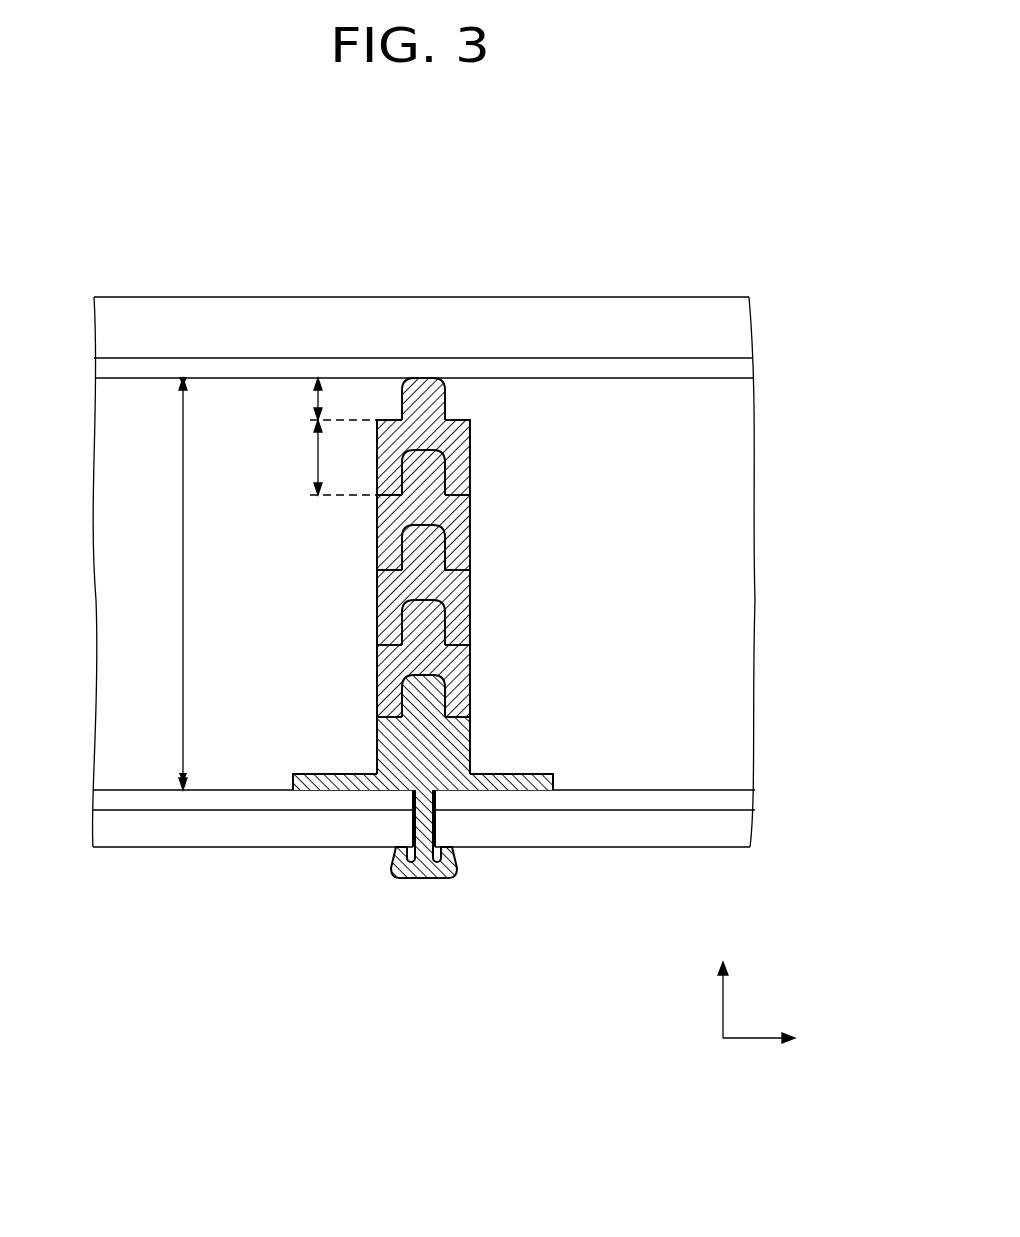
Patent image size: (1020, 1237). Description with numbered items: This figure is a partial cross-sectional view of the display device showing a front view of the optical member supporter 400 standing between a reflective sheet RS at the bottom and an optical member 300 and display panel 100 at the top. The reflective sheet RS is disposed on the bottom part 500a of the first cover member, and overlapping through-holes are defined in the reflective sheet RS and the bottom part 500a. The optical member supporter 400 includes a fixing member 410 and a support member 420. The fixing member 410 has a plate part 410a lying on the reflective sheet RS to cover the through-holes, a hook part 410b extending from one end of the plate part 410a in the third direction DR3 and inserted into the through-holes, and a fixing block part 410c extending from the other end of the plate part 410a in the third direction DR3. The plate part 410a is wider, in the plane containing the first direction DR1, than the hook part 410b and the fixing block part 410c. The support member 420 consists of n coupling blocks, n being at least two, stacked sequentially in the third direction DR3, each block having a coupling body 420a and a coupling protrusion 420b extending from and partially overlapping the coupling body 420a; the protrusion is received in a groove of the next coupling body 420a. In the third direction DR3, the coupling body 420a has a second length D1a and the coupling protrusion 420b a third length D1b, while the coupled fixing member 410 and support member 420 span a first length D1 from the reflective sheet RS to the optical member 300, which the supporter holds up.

The display panel 100 is at (743, 327).
The optical member 300 is at (745, 367).
The optical member supporter 400 is at (443, 599).
The support member 420 is at (452, 456).
The coupling body 420a is at (462, 460).
The coupling protrusion 420b is at (424, 444).
The fixing member 410 is at (443, 839).
The plate part 410a is at (498, 783).
The hook part 410b is at (424, 902).
The fixing block part 410c is at (460, 743).
The reflective sheet RS is at (745, 800).
The bottom part 500a is at (745, 830).
The first length D1 is at (169, 584).
The second length D1a is at (324, 457).
The third length D1b is at (324, 399).
The first direction DR1 is at (780, 1038).
The third direction DR3 is at (725, 986).